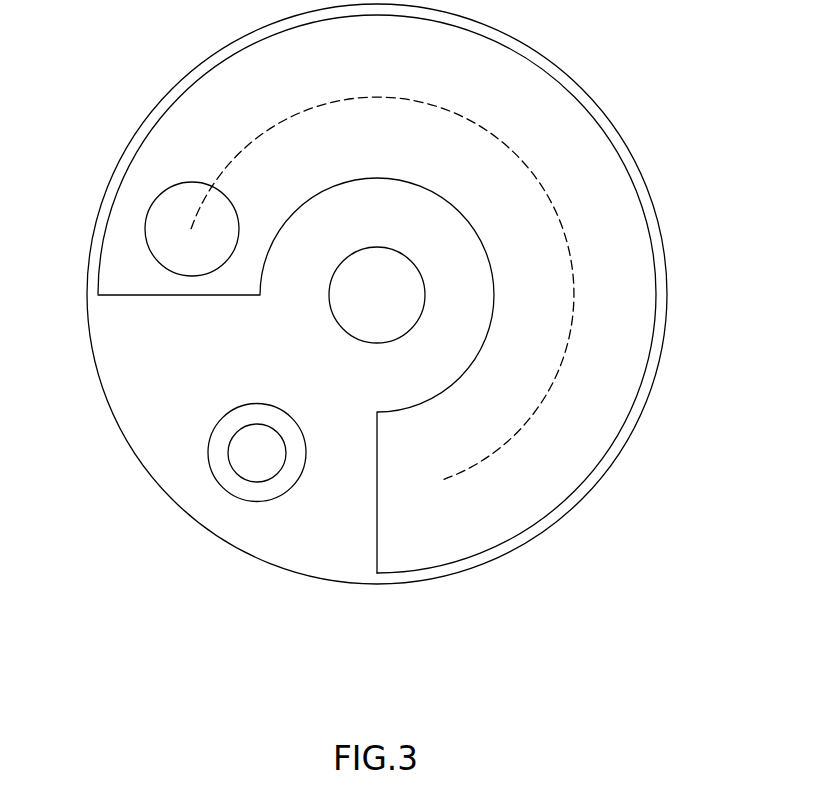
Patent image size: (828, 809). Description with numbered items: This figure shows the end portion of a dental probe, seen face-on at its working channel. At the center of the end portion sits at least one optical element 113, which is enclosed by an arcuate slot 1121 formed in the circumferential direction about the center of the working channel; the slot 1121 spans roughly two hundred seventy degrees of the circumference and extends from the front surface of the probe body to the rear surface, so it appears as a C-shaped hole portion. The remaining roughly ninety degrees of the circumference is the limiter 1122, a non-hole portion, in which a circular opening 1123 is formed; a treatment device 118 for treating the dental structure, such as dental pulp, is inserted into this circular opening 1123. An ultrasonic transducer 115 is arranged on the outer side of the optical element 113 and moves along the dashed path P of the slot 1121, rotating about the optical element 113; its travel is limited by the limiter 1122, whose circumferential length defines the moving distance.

The optical element 113 is at (334, 316).
The ultrasonic transducer 115 is at (145, 229).
The treatment device 118 is at (277, 472).
The arcuate slot 1121 is at (457, 530).
The limiter 1122 is at (160, 378).
The circular opening 1123 is at (228, 475).
The path P is at (575, 290).